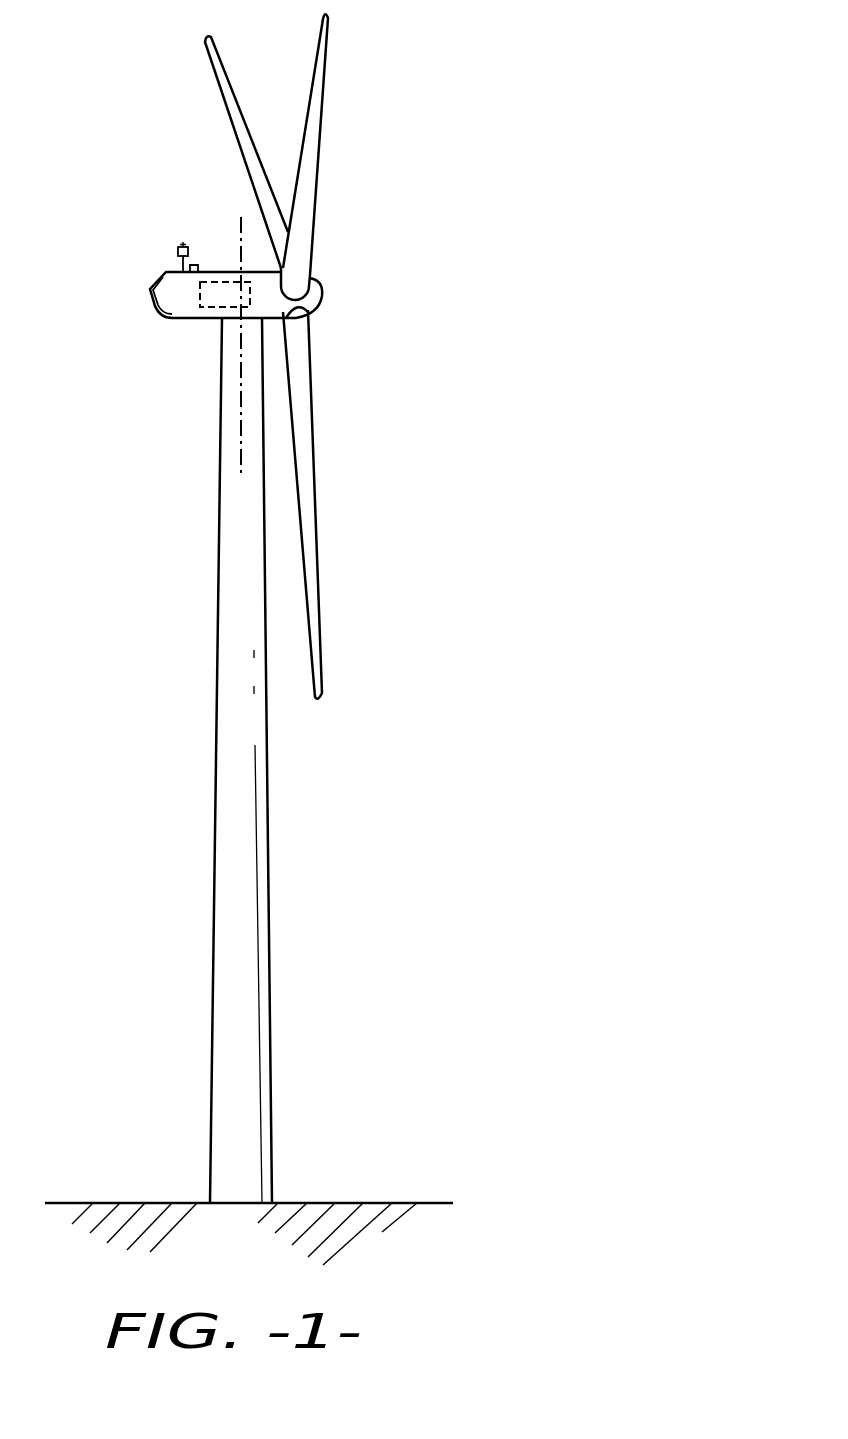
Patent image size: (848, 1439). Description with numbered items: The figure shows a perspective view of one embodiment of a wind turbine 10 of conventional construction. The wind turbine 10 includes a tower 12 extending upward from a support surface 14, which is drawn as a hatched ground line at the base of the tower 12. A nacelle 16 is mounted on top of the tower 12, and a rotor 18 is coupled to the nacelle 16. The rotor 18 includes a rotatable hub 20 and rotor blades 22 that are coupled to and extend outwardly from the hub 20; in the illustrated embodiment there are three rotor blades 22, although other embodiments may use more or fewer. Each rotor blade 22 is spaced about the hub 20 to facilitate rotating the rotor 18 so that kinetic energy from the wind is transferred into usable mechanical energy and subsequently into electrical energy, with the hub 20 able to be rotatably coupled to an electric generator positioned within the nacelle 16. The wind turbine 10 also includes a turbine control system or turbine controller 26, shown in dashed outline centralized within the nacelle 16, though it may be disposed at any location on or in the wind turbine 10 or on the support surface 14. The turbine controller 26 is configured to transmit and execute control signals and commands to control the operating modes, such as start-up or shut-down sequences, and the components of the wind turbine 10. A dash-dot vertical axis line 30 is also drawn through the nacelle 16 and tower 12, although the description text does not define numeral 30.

The wind turbine 10 is at (452, 98).
The tower 12 is at (224, 885).
The support surface 14 is at (133, 1203).
The nacelle 16 is at (195, 322).
The rotor 18 is at (316, 349).
The rotatable hub 20 is at (323, 300).
The rotor blade 22 is at (318, 60).
The turbine controller 26 is at (213, 280).
The yaw axis 30 is at (240, 228).